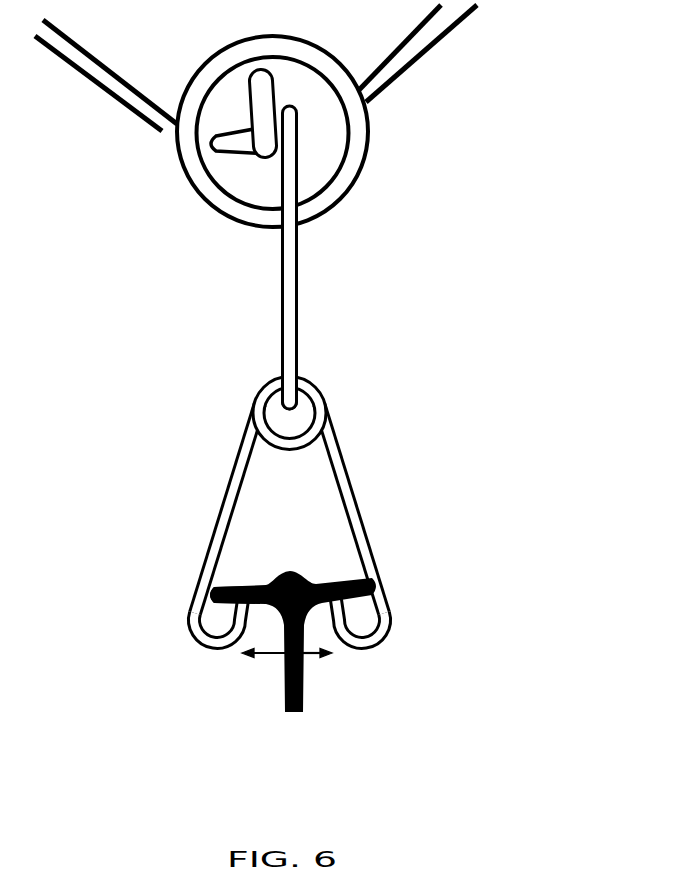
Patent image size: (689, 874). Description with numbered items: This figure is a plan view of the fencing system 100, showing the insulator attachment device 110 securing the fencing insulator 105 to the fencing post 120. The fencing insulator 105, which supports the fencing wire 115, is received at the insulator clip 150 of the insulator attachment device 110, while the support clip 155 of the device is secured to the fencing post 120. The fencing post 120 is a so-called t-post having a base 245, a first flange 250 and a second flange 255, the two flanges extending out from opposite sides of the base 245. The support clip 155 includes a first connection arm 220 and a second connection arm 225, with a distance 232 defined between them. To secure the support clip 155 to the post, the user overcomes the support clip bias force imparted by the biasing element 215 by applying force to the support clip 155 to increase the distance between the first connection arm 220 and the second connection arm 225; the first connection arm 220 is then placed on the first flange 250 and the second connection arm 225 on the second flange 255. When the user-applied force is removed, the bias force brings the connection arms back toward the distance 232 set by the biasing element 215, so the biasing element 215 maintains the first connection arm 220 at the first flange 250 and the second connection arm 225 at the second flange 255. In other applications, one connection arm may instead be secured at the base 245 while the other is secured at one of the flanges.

The fencing system 100 is at (574, 168).
The fencing insulator 105 is at (360, 184).
The insulator attachment device 110 is at (282, 362).
The fencing wire 115 is at (92, 77).
The fencing post 120 is at (293, 652).
The insulator clip 150 is at (308, 294).
The support clip 155 is at (282, 523).
The biasing element 215 is at (312, 392).
The first connection arm 220 is at (397, 594).
The second connection arm 225 is at (178, 594).
The distance 232 is at (308, 652).
The base 245 is at (283, 687).
The first flange 250 is at (293, 621).
The second flange 255 is at (237, 587).